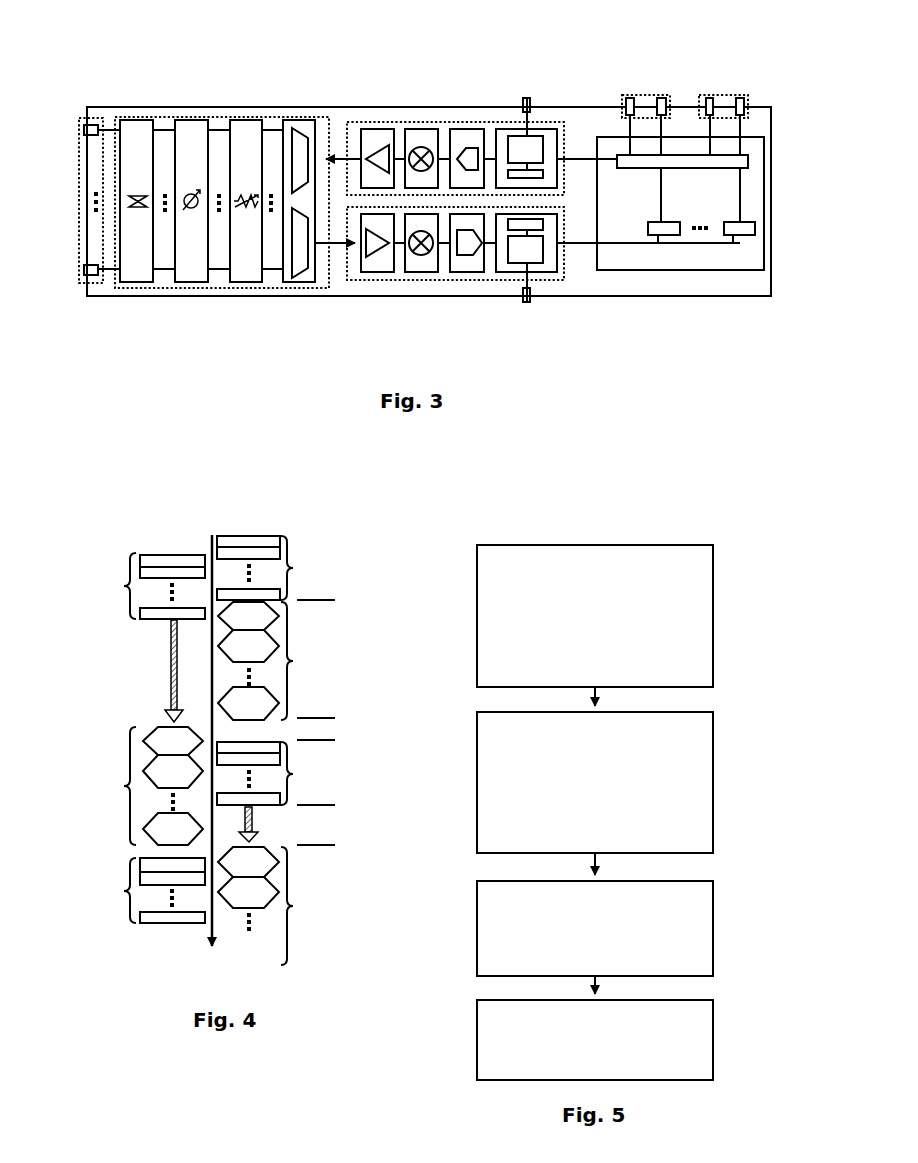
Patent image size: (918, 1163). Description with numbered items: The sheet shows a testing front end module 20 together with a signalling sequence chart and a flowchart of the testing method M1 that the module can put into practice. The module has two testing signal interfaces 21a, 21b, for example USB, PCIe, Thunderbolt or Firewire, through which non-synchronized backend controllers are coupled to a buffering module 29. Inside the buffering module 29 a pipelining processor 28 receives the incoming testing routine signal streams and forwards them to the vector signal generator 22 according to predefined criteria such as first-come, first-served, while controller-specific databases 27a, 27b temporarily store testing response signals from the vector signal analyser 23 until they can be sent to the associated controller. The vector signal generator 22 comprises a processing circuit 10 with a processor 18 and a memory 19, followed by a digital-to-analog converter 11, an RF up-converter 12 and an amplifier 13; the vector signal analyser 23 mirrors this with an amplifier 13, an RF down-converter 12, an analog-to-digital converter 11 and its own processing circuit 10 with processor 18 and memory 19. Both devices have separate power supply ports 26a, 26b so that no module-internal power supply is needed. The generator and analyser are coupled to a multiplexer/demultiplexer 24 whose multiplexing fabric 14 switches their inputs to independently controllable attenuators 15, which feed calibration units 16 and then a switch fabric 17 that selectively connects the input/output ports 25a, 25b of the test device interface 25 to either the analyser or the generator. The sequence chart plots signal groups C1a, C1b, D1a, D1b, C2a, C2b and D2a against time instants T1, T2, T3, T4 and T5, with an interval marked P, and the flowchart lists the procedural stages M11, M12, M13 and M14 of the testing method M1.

In FIG. 3, the processing circuit 10 is at (505, 128).
In FIG. 3, the digital-to-analog converter / analog-to-digital converter 11 is at (475, 128).
In FIG. 3, the RF up-converter / RF down-converter 12 is at (418, 128).
In FIG. 3, the amplifier 13 is at (385, 128).
In FIG. 3, the multiplexing fabric 14 is at (303, 118).
In FIG. 3, the attenuators 15 is at (245, 118).
In FIG. 3, the calibration units 16 is at (197, 118).
In FIG. 3, the switch fabric 17 is at (128, 118).
In FIG. 3, the processor 18 is at (533, 137).
In FIG. 3, the memory 19 is at (545, 175).
In FIG. 3, the testing front end module 20 is at (113, 46).
In FIG. 3, the testing signal interface 21a is at (628, 95).
In FIG. 3, the testing signal interface 21b is at (705, 95).
In FIG. 3, the vector signal generator 22 is at (455, 122).
In FIG. 3, the vector signal analyser 23 is at (438, 282).
In FIG. 3, the multiplexer/demultiplexer 24 is at (165, 116).
In FIG. 3, the test device interface 25 is at (82, 284).
In FIG. 3, the input/output port 25a is at (84, 128).
In FIG. 3, the input/output port 25b is at (84, 268).
In FIG. 3, the power supply port 26a is at (526, 97).
In FIG. 3, the power supply port 26b is at (527, 303).
In FIG. 3, the controller-specific database 27a is at (660, 236).
In FIG. 3, the controller-specific database 27b is at (733, 236).
In FIG. 3, the pipelining processor 28 is at (692, 169).
In FIG. 3, the buffering module 29 is at (605, 271).
In FIG. 4, the first testing routine control signals C1a is at (295, 568).
In FIG. 4, the first backend controller control signals C1b is at (122, 586).
In FIG. 4, the first testing routine data signals D1a is at (295, 661).
In FIG. 4, the first backend controller data signals D1b is at (122, 786).
In FIG. 4, the second testing routine control signals C2a is at (295, 774).
In FIG. 4, the second backend controller control signals C2b is at (122, 891).
In FIG. 4, the second testing routine data signals D2a is at (295, 906).
In FIG. 4, the first time instant T1 is at (329, 602).
In FIG. 4, the second time instant T2 is at (329, 722).
In FIG. 4, the third time instant T3 is at (329, 744).
In FIG. 4, the fourth time instant T4 is at (329, 807).
In FIG. 4, the fifth time instant T5 is at (329, 847).
In FIG. 4, the prioritization / processing delay P is at (170, 670).
In FIG. 5, the testing method M1 is at (486, 534).
In FIG. 5, the transmitting first testing routine signals M11 is at (713, 632).
In FIG. 5, the transmitting second testing routine signals M12 is at (713, 798).
In FIG. 5, the prioritizing testing routine signals M13 is at (713, 932).
In FIG. 5, the generating testing signals M14 is at (713, 1037).